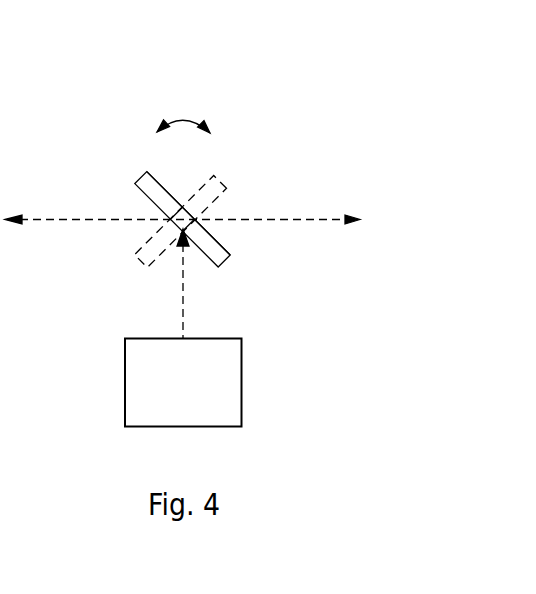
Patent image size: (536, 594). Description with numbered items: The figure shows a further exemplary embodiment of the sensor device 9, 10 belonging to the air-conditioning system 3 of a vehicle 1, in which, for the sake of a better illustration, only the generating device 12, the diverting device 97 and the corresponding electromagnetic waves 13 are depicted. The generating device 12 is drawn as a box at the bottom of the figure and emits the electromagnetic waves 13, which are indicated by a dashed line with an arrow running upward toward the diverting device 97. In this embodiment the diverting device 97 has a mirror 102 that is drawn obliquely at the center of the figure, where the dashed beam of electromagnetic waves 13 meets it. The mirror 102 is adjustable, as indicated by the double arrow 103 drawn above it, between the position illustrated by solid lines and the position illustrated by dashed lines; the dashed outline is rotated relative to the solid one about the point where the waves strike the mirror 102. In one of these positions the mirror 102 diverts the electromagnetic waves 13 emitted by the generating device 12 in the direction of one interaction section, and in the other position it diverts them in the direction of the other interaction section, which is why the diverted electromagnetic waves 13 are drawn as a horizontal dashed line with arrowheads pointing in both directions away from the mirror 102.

The vehicle 1 is at (334, 132).
The air-conditioning system 3 is at (350, 174).
The sensor device 9 is at (146, 151).
The mirror 10 is at (114, 135).
The diverting device 97 is at (162, 172).
The mirror 102 is at (127, 270).
The double arrow 103 is at (182, 117).
The generating device 12 is at (194, 396).
The electromagnetic waves 13 is at (85, 208).